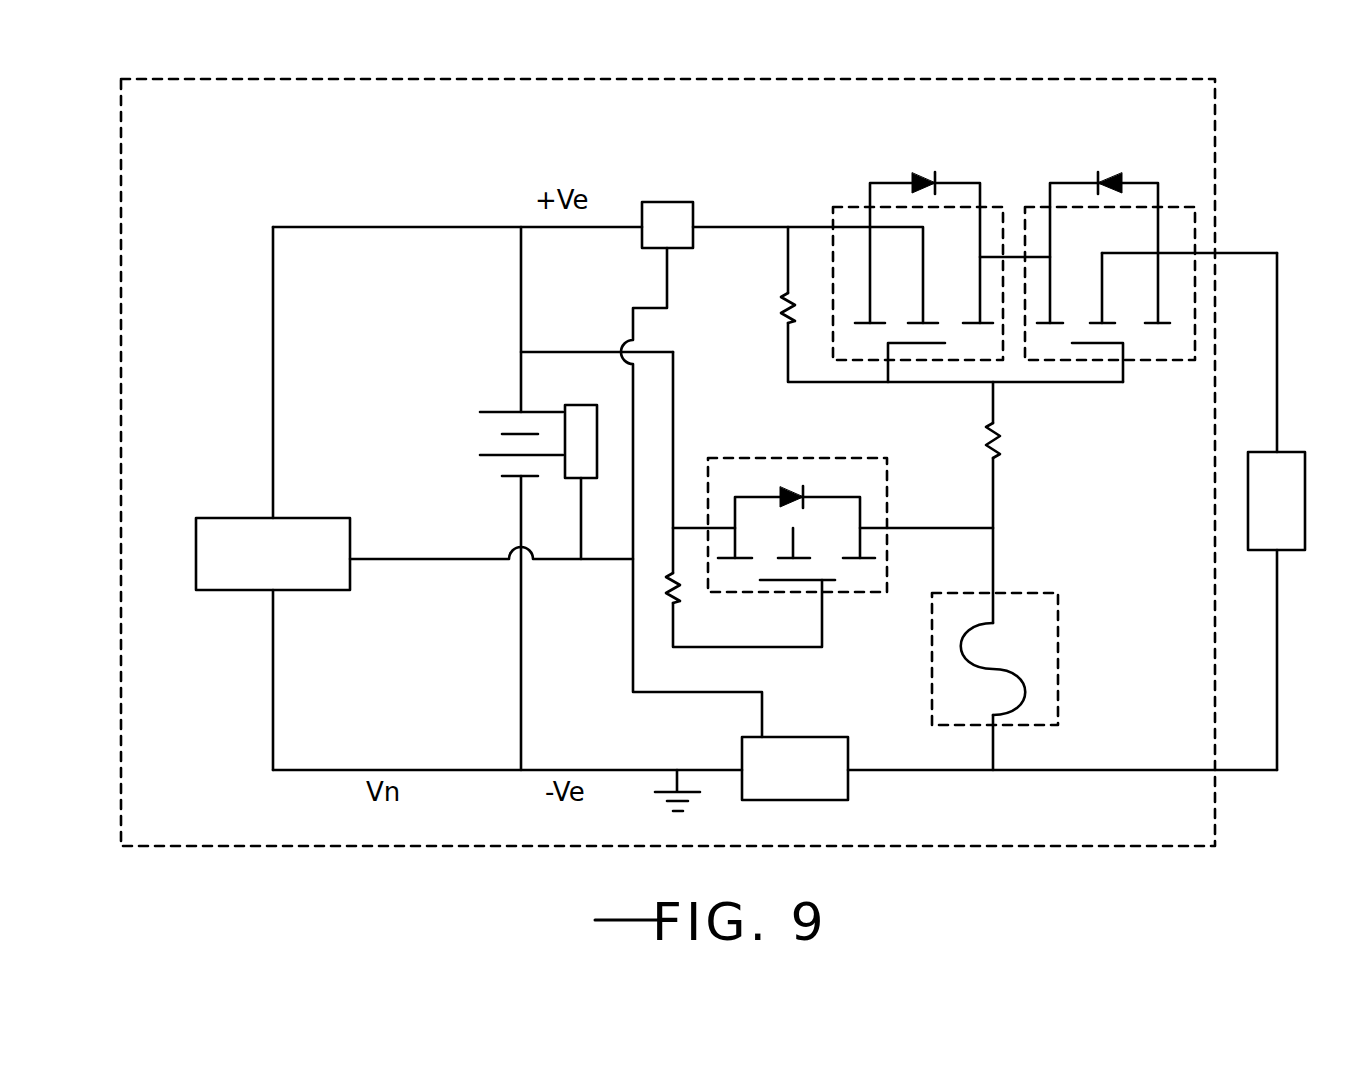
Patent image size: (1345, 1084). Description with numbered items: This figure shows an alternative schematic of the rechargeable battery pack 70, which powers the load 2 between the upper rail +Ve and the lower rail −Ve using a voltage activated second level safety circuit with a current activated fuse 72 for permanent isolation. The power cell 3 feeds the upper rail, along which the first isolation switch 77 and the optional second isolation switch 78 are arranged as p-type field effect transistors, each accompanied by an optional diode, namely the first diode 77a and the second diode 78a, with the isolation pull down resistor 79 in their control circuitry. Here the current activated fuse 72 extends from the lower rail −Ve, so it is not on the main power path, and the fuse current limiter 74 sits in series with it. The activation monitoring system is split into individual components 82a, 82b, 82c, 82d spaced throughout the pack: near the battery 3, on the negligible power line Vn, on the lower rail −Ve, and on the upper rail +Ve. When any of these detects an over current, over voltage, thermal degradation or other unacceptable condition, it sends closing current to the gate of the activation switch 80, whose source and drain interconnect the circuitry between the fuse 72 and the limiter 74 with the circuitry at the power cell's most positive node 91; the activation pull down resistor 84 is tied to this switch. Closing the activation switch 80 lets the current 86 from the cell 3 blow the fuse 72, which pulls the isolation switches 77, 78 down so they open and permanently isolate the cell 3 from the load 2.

The load 2 is at (1296, 452).
The power cell 3 is at (480, 440).
The rechargeable battery pack 70 is at (220, 846).
The current activated fuse 72 is at (1060, 626).
The fuse current limiter 74 is at (1005, 443).
The first isolation switch 77 is at (875, 240).
The first diode 77a is at (891, 182).
The second isolation switch 78 is at (1110, 240).
The second diode 78a is at (1072, 182).
The isolation pull down resistor 79 is at (781, 297).
The activation switch 80 is at (760, 458).
The activation monitoring system component 82a is at (581, 405).
The activation monitoring system component 82b is at (215, 518).
The activation monitoring system component 82c is at (783, 737).
The activation monitoring system component 82d is at (666, 202).
The activation pull down resistor 84 is at (678, 599).
The current 86 is at (570, 238).
The power cell's most positive node 91 is at (520, 401).